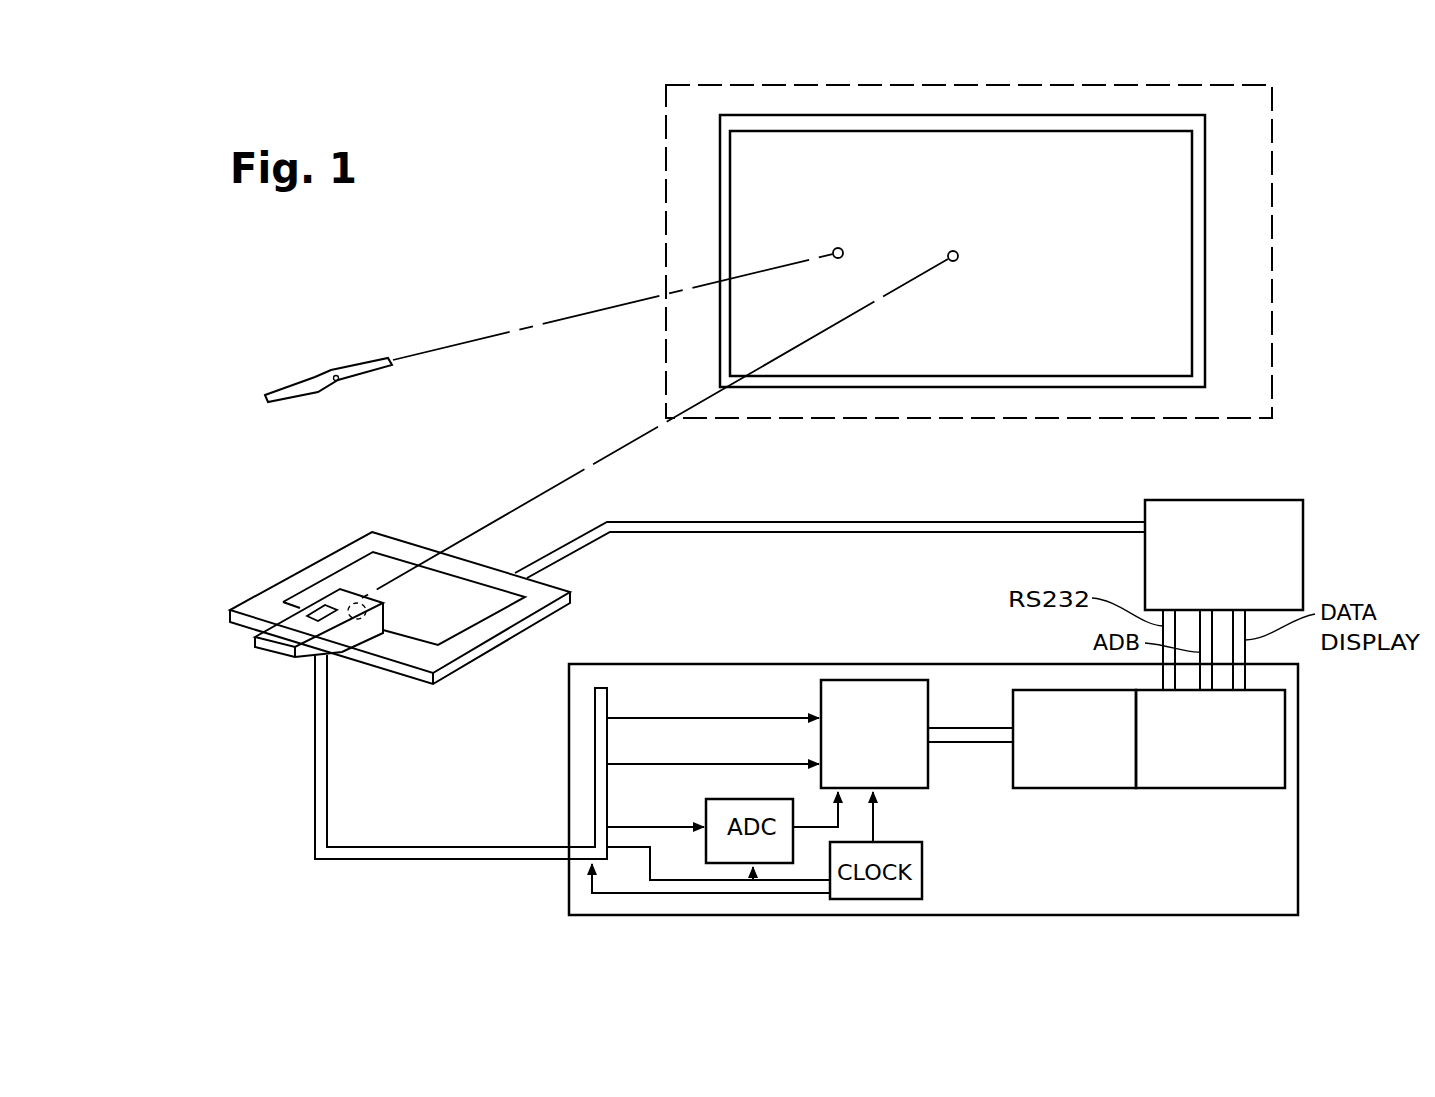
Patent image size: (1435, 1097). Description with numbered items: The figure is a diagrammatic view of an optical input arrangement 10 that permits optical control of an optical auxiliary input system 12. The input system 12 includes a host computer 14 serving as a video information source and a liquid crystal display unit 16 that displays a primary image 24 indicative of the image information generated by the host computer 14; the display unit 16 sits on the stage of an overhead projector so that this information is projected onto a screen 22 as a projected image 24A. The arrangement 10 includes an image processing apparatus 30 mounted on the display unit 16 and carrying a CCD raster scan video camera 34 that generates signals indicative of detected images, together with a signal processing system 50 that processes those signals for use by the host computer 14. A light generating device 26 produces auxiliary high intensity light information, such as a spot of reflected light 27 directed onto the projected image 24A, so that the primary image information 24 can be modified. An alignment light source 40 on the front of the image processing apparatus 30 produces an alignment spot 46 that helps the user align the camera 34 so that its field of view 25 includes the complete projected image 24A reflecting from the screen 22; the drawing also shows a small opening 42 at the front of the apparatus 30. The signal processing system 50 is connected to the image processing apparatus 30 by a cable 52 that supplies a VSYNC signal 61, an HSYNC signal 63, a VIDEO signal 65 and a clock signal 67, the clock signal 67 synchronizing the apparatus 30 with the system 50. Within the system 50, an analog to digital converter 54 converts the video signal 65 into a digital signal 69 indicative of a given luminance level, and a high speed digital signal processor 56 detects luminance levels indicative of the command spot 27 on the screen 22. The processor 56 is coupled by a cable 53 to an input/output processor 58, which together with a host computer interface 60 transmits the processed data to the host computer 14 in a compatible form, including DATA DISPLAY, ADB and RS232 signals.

The optical input arrangement 10 is at (471, 884).
The optical auxiliary input system 12 is at (497, 476).
The host computer 14 is at (1293, 532).
The liquid crystal display unit 16 is at (395, 525).
The screen 22 is at (1200, 229).
The primary image 24 is at (447, 621).
The projected image 24A is at (830, 198).
The field of view 25 is at (1273, 137).
The light generating device 26 is at (347, 358).
The spot of reflected light 27 is at (843, 249).
The image processing apparatus 30 is at (260, 657).
The video camera 34 is at (350, 620).
The alignment light source 40 is at (356, 600).
The slot aperture 42 is at (320, 608).
The alignment spot 46 is at (957, 250).
The signal processing system 50 is at (1066, 927).
The cable 52 is at (430, 847).
The cable 53 is at (970, 742).
The analog to digital converter 54 is at (727, 865).
The digital signal processor 56 is at (900, 688).
The input/output processor 58 is at (1046, 697).
The host computer interface 60 is at (1282, 752).
The VSYNC signal 61 is at (778, 716).
The HSYNC signal 63 is at (628, 762).
The VIDEO signal 65 is at (687, 807).
The clock signal 67 is at (657, 882).
The digital signal 69 is at (818, 828).